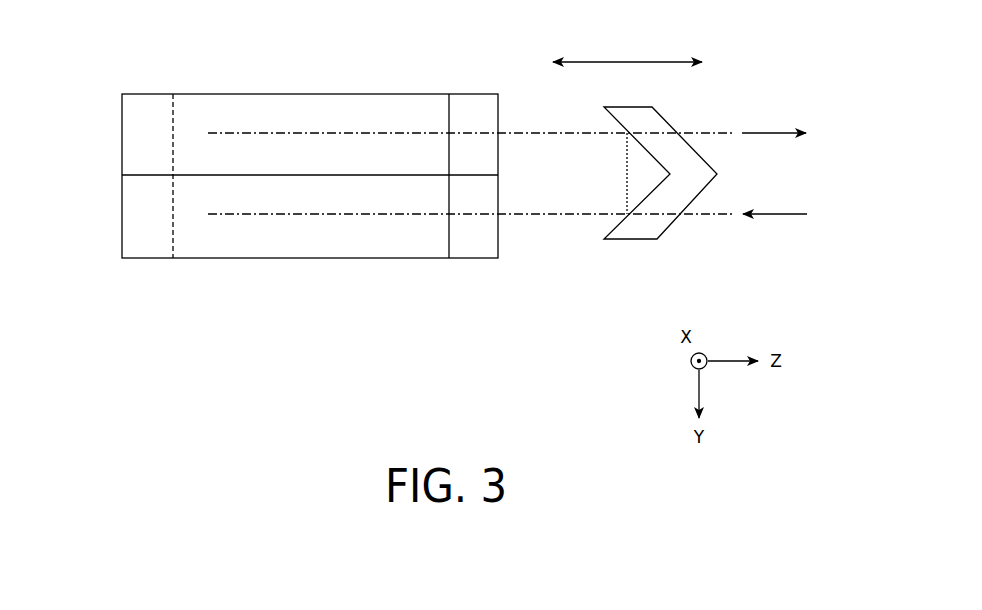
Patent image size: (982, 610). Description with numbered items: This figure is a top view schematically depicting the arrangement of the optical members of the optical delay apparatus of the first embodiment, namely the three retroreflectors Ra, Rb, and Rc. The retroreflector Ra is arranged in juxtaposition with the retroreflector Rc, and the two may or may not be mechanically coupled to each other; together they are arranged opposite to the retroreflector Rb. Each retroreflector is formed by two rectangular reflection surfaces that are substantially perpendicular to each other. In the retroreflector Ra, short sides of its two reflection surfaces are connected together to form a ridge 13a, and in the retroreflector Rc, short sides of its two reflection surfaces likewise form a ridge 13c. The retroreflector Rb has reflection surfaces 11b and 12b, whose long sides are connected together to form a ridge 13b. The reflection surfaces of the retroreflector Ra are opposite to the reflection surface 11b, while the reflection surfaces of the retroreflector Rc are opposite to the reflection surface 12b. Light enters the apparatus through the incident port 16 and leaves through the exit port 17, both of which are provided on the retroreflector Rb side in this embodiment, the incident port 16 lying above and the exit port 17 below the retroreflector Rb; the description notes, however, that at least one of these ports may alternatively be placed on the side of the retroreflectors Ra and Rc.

The retroreflector Rc is at (275, 93).
The retroreflector Ra is at (270, 258).
The retroreflector Rb is at (717, 173).
The ridge 13c is at (173, 151).
The ridge 13a is at (173, 232).
The ridge 13b is at (671, 177).
The reflection surface 12b is at (604, 116).
The reflection surface 11b is at (604, 231).
The exit port 17 is at (722, 118).
The incident port 16 is at (723, 231).